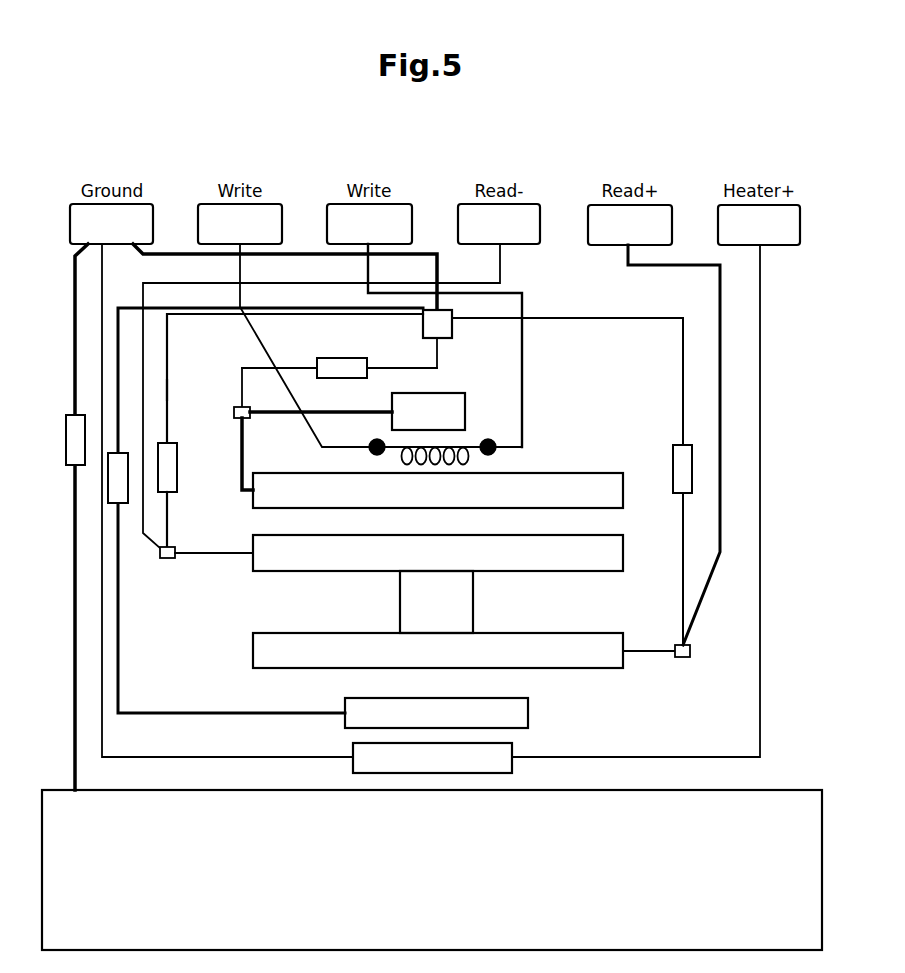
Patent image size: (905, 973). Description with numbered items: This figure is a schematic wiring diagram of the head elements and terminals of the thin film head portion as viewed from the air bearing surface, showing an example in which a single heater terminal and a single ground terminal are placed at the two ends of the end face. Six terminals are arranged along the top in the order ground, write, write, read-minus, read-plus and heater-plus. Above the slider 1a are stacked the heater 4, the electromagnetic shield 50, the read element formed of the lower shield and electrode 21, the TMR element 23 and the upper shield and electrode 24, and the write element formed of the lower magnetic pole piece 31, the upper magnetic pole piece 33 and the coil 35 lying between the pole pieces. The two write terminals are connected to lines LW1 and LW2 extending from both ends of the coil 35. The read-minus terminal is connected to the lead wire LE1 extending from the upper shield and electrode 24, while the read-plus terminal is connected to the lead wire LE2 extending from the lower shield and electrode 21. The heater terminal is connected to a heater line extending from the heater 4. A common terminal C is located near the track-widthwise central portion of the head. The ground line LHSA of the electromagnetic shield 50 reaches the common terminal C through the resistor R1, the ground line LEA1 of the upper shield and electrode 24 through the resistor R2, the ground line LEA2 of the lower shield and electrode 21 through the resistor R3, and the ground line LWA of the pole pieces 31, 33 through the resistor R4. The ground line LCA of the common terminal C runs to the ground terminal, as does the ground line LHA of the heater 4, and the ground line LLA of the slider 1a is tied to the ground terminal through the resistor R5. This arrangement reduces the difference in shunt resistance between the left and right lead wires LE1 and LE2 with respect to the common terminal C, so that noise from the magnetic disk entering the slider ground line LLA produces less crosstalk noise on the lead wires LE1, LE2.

The slider 1a is at (782, 796).
The heater 4 is at (512, 757).
The electromagnetic shield 50 is at (528, 712).
The lower shield and electrode 21 is at (565, 652).
The TMR element 23 is at (475, 600).
The upper shield and electrode 24 is at (625, 548).
The lower magnetic pole piece 31 is at (563, 490).
The upper magnetic pole piece 33 is at (450, 412).
The coil 35 is at (470, 460).
The common terminal C is at (452, 328).
The resistor R1 is at (108, 481).
The resistor R2 is at (178, 462).
The resistor R3 is at (673, 465).
The resistor R4 is at (343, 366).
The resistor R5 is at (66, 440).
The ground line of the common terminal LCA is at (437, 246).
The line LW1 is at (262, 338).
The line LW2 is at (522, 382).
The ground line LWA is at (242, 366).
The ground line LEA1 is at (194, 391).
The ground line LEA2 is at (683, 402).
The lead wire LE1 is at (158, 553).
The lead wire LE2 is at (703, 602).
The ground line of the slider LLA is at (75, 579).
The ground line of the electromagnetic shield LHSA is at (118, 680).
The ground line of the heater LHA is at (208, 757).